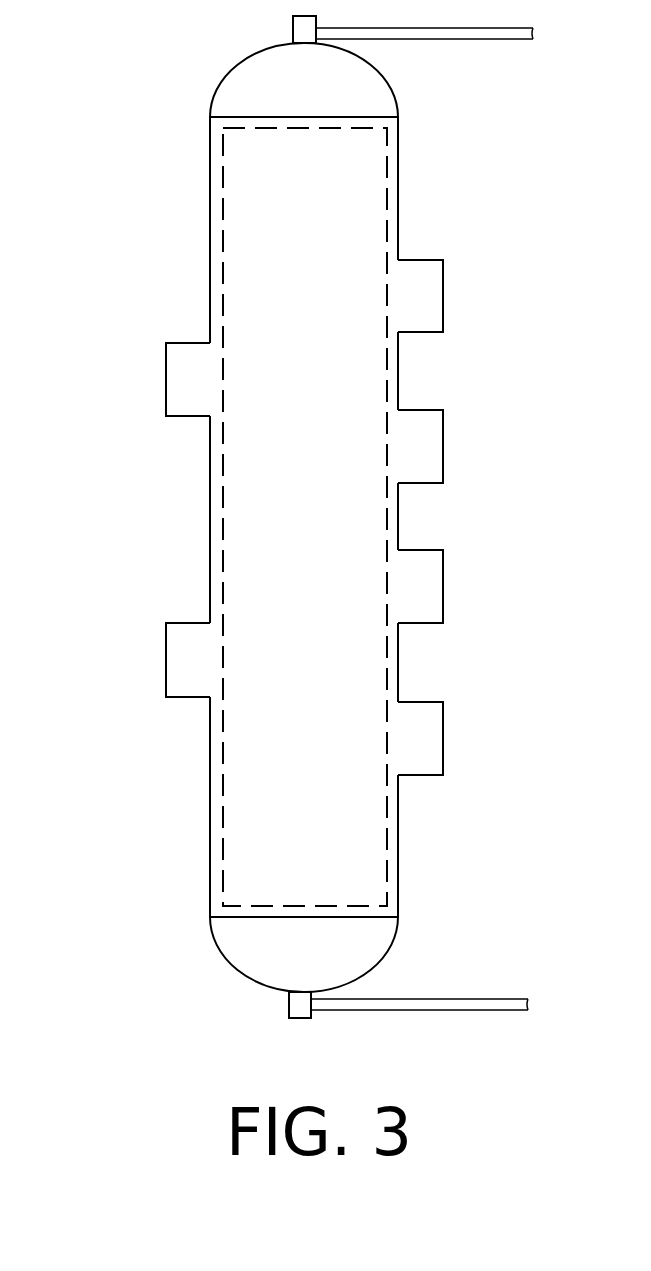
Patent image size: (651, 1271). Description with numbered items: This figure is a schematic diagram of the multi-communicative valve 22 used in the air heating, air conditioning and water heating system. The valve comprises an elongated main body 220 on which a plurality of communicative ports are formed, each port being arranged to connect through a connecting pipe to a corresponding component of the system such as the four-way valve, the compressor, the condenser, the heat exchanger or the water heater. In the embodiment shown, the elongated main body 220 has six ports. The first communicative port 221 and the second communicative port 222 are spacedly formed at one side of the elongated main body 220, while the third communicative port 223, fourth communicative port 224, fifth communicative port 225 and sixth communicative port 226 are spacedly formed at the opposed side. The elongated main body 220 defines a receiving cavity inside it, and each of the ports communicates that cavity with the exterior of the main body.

The multi-communicative valve 22 is at (308, 517).
The elongated main body 220 is at (253, 507).
The first communicative port 221 is at (177, 342).
The second communicative port 222 is at (177, 622).
The third communicative port 223 is at (415, 258).
The fourth communicative port 224 is at (430, 409).
The fifth communicative port 225 is at (423, 548).
The sixth communicative port 226 is at (417, 700).